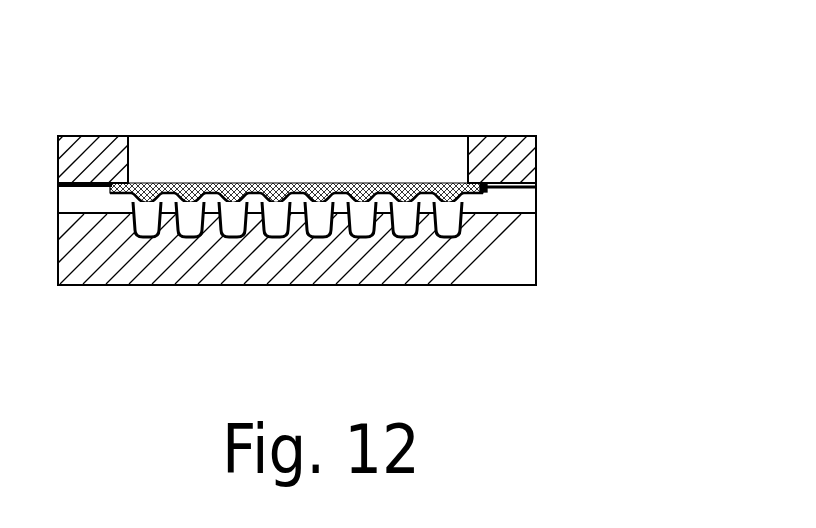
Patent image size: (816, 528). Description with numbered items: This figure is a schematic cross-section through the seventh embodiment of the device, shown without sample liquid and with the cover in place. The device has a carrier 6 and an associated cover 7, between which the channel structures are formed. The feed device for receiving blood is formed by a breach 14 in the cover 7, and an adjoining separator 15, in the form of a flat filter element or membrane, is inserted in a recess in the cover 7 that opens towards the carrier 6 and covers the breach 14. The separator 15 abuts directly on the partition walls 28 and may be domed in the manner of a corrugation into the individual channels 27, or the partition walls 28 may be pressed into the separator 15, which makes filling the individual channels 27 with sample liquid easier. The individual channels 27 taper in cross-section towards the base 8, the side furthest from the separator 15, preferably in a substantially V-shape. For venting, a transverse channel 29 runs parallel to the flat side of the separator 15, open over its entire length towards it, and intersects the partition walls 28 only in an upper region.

The carrier 6 is at (497, 260).
The cover 7 is at (502, 156).
The base 8 is at (438, 238).
The breach 14 is at (128, 154).
The separator 15 is at (300, 183).
The individual channels 27 is at (361, 234).
The partition walls 28 is at (247, 210).
The transverse channel 29 is at (505, 193).